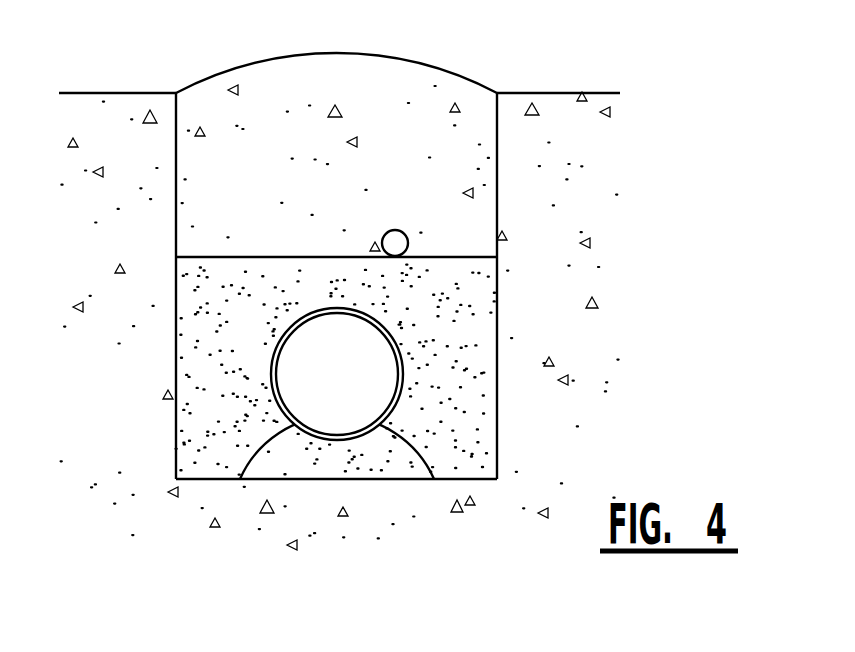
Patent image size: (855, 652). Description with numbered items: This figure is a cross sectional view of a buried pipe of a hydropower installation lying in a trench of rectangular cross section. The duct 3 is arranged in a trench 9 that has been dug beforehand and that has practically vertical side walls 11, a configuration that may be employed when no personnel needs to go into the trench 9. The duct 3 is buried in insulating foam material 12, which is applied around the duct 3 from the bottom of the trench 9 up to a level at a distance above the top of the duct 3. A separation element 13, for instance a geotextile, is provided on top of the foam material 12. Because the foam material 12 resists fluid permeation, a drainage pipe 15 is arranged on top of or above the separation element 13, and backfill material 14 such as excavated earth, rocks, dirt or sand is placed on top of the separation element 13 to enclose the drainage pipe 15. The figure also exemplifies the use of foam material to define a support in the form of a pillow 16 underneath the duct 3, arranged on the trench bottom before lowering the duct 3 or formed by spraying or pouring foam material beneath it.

The duct 3 is at (271, 366).
The trench 9 is at (497, 315).
The side walls 11 is at (497, 127).
The foam material 12 is at (193, 446).
The separation element 13 is at (215, 257).
The backfill material 14 is at (278, 88).
The drainage pipe 15 is at (397, 240).
The pillow 16 is at (367, 462).